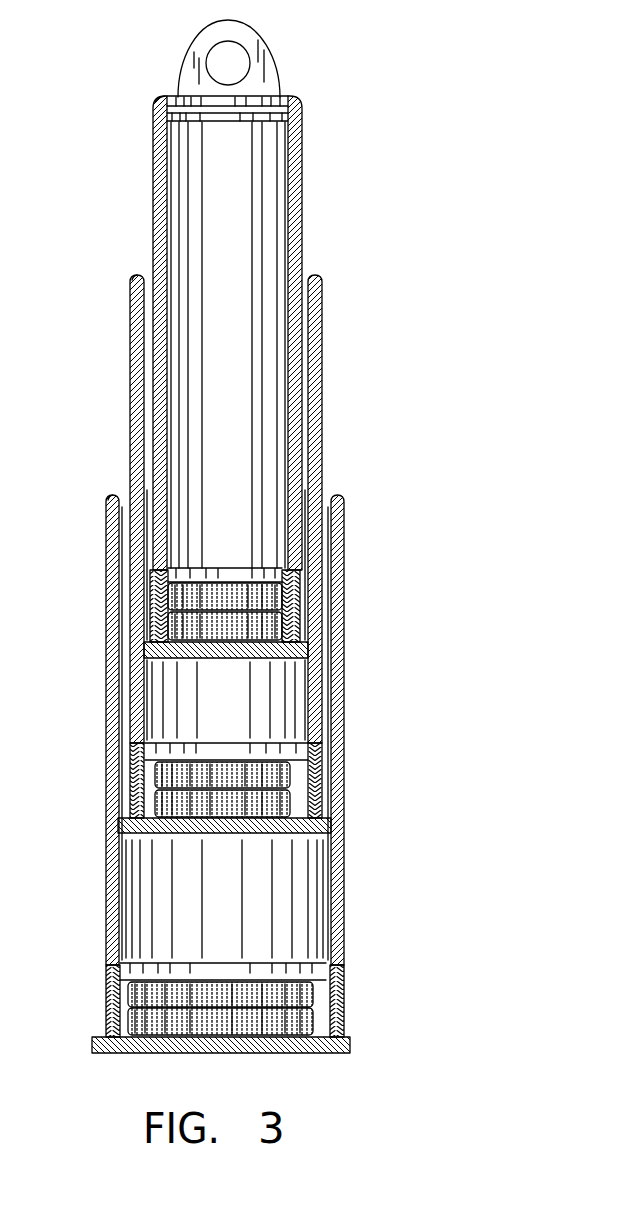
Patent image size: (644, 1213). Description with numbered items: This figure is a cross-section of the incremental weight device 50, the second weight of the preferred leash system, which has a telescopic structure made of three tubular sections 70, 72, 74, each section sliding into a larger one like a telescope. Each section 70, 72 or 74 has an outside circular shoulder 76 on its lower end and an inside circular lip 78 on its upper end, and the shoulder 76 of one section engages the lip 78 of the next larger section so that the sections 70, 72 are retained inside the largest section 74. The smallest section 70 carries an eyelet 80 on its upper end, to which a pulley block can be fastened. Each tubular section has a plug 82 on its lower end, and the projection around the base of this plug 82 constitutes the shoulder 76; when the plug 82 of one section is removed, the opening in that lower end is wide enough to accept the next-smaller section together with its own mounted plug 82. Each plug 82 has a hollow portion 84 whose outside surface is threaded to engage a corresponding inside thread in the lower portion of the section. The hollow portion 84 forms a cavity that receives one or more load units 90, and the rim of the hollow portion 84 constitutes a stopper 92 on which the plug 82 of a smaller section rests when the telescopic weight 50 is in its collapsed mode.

The incremental weight device 50 is at (46, 160).
The tubular section 70 is at (303, 188).
The tubular section 72 is at (325, 380).
The tubular section 74 is at (345, 567).
The outside circular shoulder 76 is at (150, 642).
The inside circular lip 78 is at (170, 97).
The eyelet 80 is at (262, 24).
The plug 82 is at (187, 660).
The hollow portion 84 is at (266, 970).
The load unit 90 is at (265, 625).
The stopper 92 is at (150, 960).